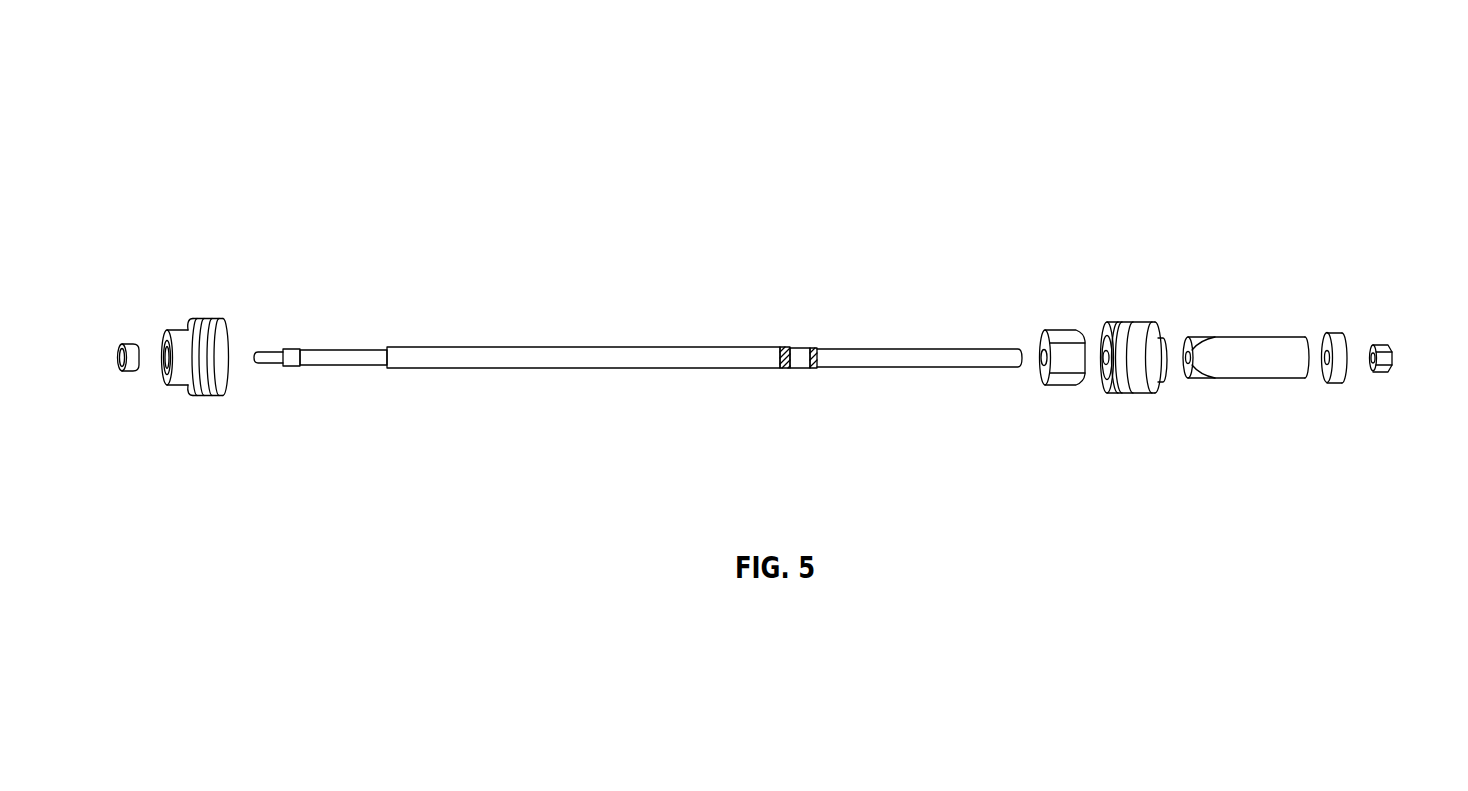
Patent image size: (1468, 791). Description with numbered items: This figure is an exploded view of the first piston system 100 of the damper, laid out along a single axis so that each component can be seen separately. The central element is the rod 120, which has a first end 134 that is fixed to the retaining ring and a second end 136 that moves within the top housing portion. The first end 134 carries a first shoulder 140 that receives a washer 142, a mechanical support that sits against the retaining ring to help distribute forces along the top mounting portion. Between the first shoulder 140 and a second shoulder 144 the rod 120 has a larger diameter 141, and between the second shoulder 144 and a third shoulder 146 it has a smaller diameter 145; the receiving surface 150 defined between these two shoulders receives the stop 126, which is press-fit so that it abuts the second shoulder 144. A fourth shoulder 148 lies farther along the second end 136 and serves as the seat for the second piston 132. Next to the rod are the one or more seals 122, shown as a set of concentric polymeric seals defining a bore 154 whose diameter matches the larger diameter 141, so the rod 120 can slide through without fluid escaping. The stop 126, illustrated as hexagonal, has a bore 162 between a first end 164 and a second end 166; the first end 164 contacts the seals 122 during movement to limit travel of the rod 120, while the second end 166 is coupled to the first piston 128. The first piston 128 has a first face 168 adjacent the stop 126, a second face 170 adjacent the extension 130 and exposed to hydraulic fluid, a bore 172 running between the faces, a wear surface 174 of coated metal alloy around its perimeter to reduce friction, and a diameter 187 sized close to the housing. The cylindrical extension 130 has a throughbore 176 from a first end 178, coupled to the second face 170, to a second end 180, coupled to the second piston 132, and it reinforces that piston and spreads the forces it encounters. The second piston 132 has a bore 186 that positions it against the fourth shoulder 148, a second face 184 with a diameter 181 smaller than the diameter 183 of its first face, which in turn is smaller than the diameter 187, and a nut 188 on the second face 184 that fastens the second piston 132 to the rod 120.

The first piston system 100 is at (1091, 61).
The rod 120 is at (643, 360).
The seals 122 is at (202, 351).
The stop 126 is at (1065, 342).
The first piston 128 is at (1171, 368).
The extension 130 is at (1263, 359).
The second piston 132 is at (1356, 375).
The first end 134 is at (302, 384).
The second end 136 is at (927, 340).
The first shoulder 140 is at (383, 365).
The larger diameter 141 is at (538, 318).
The washer 142 is at (125, 344).
The second shoulder 144 is at (783, 368).
The smaller diameter 145 is at (800, 397).
The third shoulder 146 is at (813, 368).
The fourth shoulder 148 is at (992, 368).
The receiving surface 150 is at (786, 350).
The bore 154 is at (165, 373).
The bore 162 is at (1048, 340).
The first end 164 is at (1037, 303).
The second end 166 is at (1083, 387).
The first face 168 is at (1098, 375).
The second face 170 is at (1165, 375).
The bore 172 is at (1114, 340).
The wear surface 174 is at (1133, 380).
The throughbore 176 is at (1195, 357).
The first end 178 is at (1193, 365).
The second end 180 is at (1307, 375).
The diameter 181 is at (1350, 392).
The diameter 183 is at (1326, 410).
The second face 184 is at (1348, 403).
The bore 186 is at (1326, 410).
The diameter 187 is at (1155, 423).
The nut 188 is at (1383, 358).